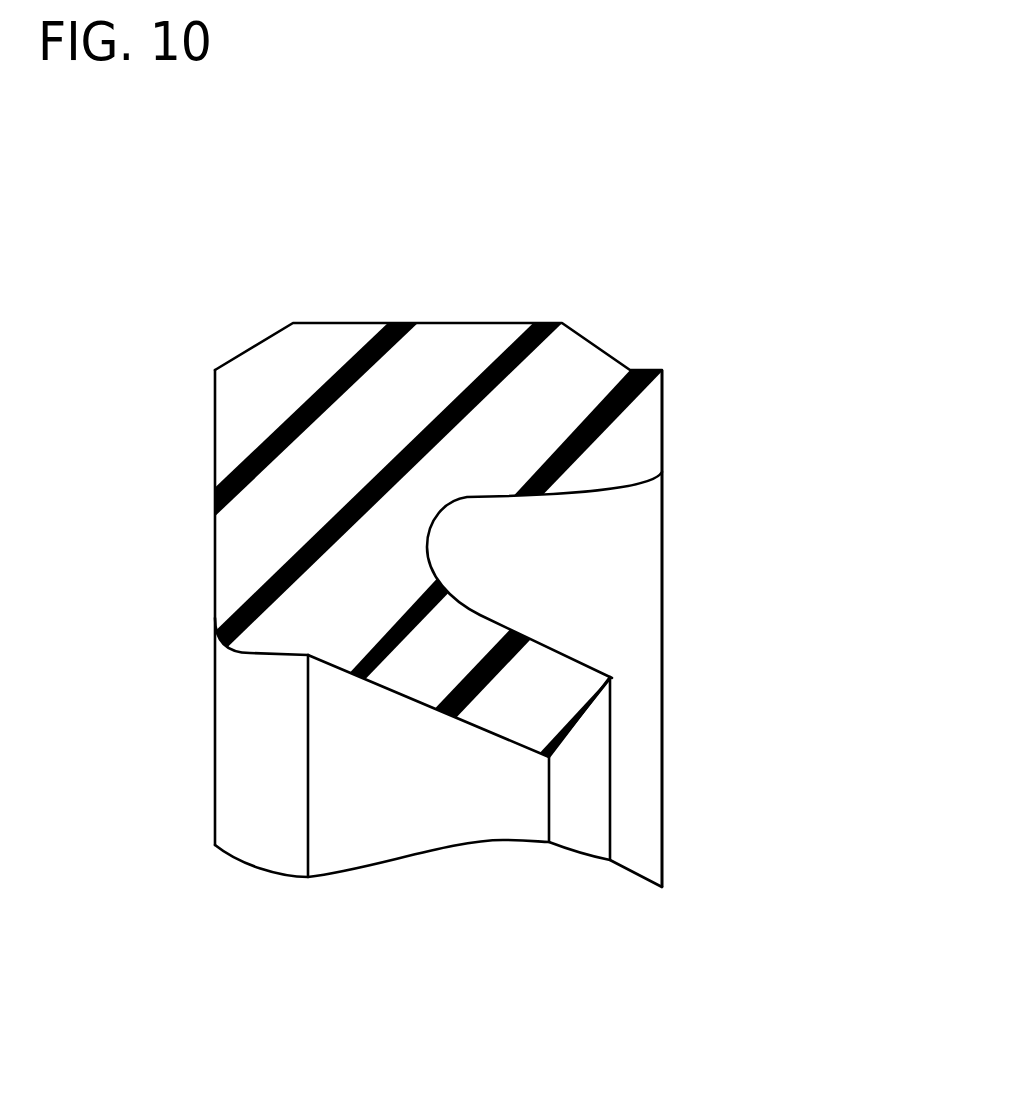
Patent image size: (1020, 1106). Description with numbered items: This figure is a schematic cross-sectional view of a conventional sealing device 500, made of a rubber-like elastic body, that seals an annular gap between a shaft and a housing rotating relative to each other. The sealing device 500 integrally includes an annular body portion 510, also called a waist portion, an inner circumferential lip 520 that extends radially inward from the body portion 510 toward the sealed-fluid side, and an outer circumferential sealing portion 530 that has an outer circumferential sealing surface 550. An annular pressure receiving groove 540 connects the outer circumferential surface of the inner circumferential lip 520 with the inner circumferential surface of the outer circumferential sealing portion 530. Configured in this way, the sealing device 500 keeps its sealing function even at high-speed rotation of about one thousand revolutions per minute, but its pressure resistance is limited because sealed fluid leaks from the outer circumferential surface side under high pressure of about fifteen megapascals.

The sealing device 500 is at (760, 350).
The body portion 510 is at (253, 520).
The inner circumferential lip 520 is at (549, 711).
The outer circumferential sealing portion 530 is at (638, 433).
The pressure receiving groove 540 is at (432, 548).
The outer circumferential sealing surface 550 is at (426, 323).